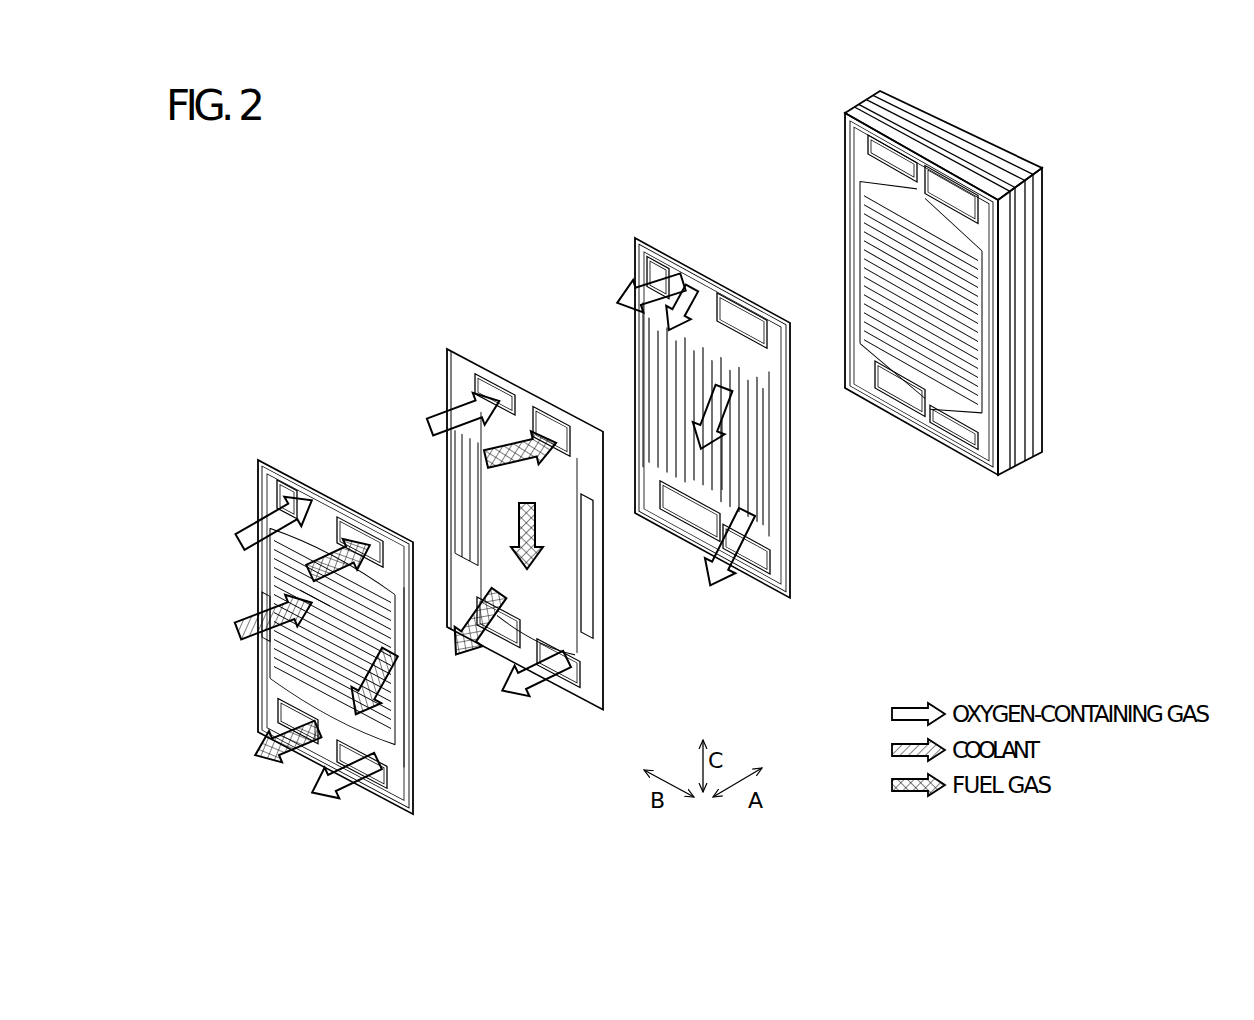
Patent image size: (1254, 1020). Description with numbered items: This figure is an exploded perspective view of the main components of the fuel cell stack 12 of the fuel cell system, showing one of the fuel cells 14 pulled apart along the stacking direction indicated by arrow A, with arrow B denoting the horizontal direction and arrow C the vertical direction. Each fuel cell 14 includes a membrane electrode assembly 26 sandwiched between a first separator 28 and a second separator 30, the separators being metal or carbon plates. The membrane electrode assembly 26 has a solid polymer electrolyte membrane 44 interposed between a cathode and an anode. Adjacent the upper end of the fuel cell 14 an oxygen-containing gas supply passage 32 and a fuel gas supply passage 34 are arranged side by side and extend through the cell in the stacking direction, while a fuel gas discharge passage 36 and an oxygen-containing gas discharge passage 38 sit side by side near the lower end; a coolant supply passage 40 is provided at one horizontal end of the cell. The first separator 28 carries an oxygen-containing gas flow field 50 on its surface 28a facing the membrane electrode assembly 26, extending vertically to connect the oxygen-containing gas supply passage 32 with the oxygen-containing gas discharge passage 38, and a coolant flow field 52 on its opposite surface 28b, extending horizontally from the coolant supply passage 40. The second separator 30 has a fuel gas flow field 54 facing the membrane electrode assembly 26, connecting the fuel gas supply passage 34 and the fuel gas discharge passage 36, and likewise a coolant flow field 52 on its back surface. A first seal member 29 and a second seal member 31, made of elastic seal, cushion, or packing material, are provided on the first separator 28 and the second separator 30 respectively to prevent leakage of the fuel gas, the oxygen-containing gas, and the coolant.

The fuel cell 12 is at (357, 187).
The fuel cell 14 is at (492, 253).
The membrane electrode assembly 26 is at (445, 360).
The first separator 28 is at (630, 277).
The surface of first separator 28a is at (658, 278).
The surface of first separator 28b is at (742, 320).
The first seal member 29 is at (791, 346).
The second separator 30 is at (287, 466).
The second seal member 31 is at (335, 637).
The oxygen-containing gas supply passage 32 is at (287, 499).
The fuel gas supply passage 34 is at (360, 542).
The fuel gas discharge passage 36 is at (298, 721).
The oxygen-containing gas discharge passage 38 is at (362, 764).
The coolant supply passage 40 is at (332, 636).
The solid polymer electrolyte membrane 44 is at (495, 394).
The oxygen-containing gas flow field 50 is at (706, 419).
The coolant flow field 52 is at (745, 452).
The fuel gas flow field 54 is at (266, 616).